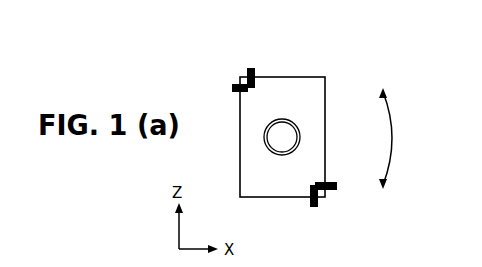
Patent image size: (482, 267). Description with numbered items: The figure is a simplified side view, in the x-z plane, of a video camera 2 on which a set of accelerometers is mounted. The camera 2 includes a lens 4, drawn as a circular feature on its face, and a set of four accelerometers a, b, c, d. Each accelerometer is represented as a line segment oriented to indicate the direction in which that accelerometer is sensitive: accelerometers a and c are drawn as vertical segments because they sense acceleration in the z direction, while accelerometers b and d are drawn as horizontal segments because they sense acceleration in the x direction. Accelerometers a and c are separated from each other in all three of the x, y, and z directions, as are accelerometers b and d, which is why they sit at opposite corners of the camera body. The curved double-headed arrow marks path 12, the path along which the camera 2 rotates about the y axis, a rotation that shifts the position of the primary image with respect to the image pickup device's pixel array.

The video camera 2 is at (303, 77).
The lens 4 is at (300, 137).
The path 12 is at (392, 138).
The accelerometer a is at (251, 62).
The accelerometer b is at (230, 87).
The accelerometer c is at (315, 210).
The accelerometer d is at (334, 184).